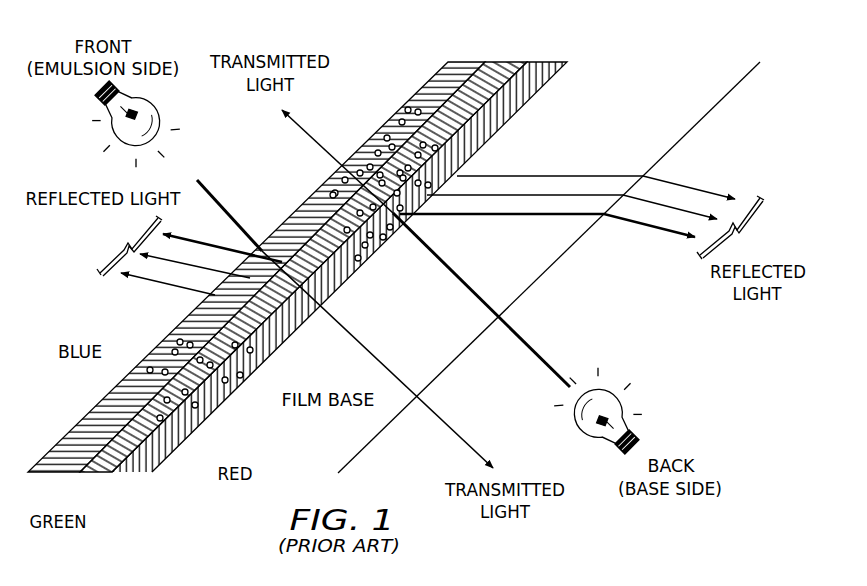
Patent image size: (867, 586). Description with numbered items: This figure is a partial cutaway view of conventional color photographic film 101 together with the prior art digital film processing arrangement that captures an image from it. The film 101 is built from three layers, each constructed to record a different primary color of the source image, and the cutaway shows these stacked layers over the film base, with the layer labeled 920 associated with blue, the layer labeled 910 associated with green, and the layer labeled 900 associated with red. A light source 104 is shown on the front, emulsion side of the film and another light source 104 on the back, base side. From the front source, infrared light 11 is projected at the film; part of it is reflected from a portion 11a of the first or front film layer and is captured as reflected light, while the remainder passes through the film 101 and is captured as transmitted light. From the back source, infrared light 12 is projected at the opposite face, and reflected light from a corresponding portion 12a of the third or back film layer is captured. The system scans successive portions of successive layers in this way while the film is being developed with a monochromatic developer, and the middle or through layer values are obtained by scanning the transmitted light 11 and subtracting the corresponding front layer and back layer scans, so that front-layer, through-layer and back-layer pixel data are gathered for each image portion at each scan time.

The color photographic film 101 is at (394, 274).
The light source 104 is at (106, 129).
The infrared light 11 is at (167, 125).
The portion 11a is at (183, 254).
The infrared light 12 is at (553, 379).
The portion 12a is at (588, 217).
The red sensitive layer 900 is at (172, 436).
The green sensitive layer 910 is at (92, 468).
The blue sensitive layer 920 is at (110, 414).